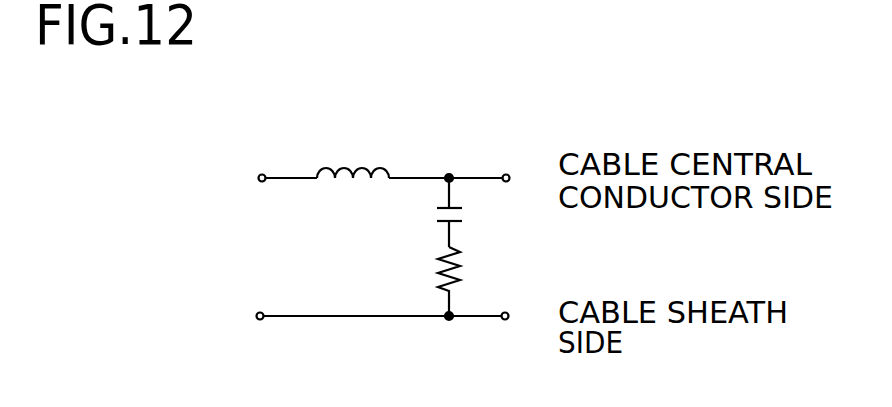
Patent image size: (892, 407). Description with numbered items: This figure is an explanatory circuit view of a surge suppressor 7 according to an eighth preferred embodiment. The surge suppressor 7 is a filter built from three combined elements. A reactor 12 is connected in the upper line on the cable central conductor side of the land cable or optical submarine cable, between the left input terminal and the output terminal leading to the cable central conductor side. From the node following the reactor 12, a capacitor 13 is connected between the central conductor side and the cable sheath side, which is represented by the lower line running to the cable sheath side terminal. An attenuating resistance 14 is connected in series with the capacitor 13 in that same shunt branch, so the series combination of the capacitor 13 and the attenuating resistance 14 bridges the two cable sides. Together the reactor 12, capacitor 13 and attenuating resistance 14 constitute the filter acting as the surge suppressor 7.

The surge suppressor 7 is at (256, 157).
The reactor 12 is at (378, 172).
The capacitor 13 is at (460, 208).
The attenuating resistance 14 is at (450, 278).